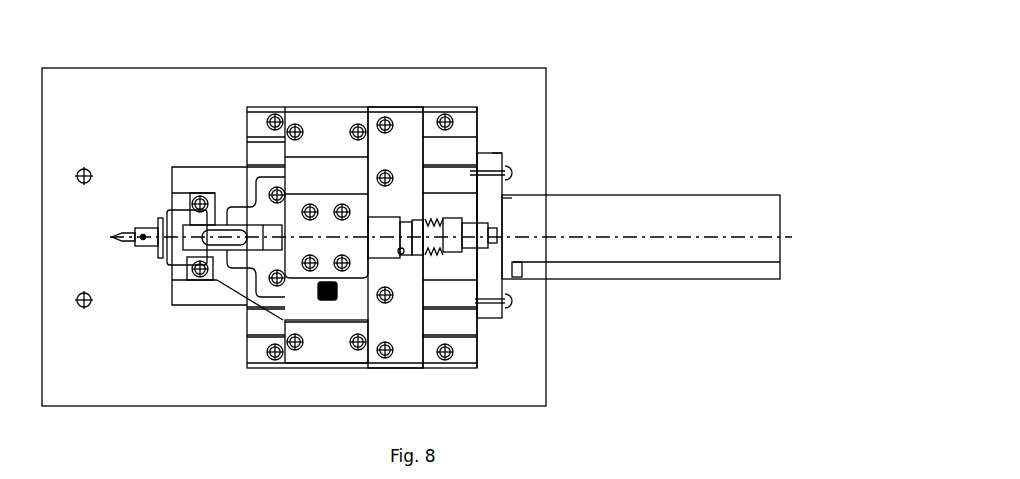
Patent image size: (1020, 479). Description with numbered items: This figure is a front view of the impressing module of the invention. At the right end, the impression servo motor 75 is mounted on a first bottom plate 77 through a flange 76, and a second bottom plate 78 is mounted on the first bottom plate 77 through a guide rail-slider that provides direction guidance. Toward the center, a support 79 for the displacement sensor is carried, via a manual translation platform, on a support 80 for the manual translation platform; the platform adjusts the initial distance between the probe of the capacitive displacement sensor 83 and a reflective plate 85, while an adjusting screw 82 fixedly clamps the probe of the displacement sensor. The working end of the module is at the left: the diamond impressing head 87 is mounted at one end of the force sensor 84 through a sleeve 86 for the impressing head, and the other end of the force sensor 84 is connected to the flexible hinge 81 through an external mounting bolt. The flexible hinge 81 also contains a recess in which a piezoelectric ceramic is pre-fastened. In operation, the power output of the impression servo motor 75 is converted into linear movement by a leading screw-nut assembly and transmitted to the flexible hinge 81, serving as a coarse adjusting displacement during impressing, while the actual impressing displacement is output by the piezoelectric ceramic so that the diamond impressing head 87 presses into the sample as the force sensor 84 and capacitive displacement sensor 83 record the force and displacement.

The impression servo motor 75 is at (600, 218).
The flange 76 is at (492, 198).
The first bottom plate 77 is at (418, 150).
The second bottom plate 78 is at (392, 163).
The support for the displacement sensor 79 is at (410, 158).
The support for the manual translation platform 80 is at (358, 203).
The flexible hinge 81 is at (312, 178).
The adjusting screw 82 is at (259, 177).
The capacitive displacement sensor 83 is at (213, 235).
The force sensor 84 is at (180, 212).
The reflective plate 85 is at (161, 218).
The sleeve for the impressing head 86 is at (150, 228).
The diamond impressing head 87 is at (127, 233).